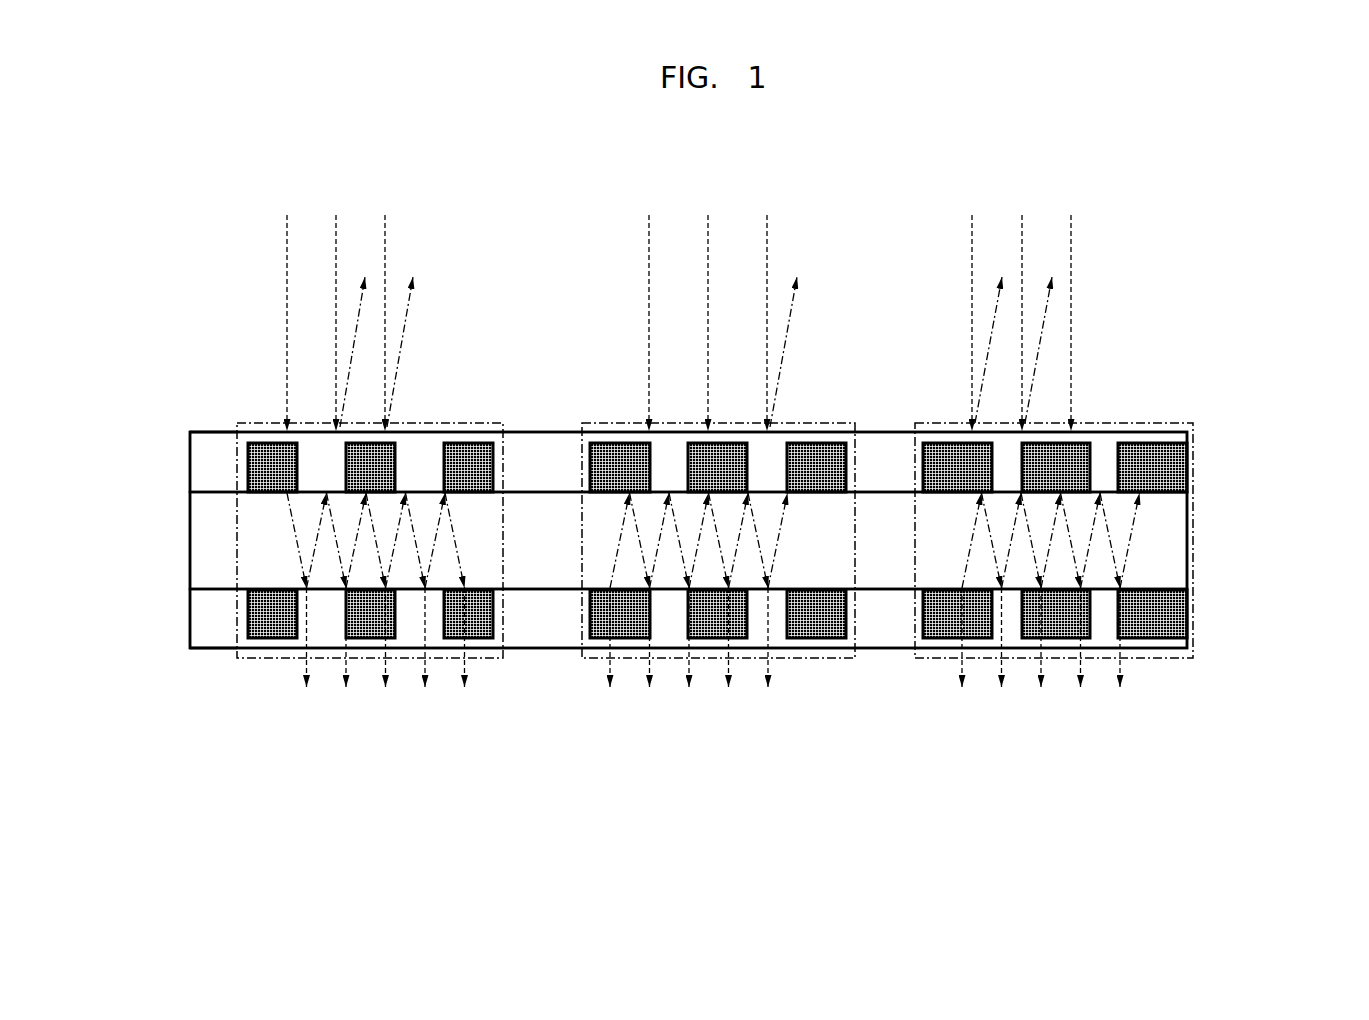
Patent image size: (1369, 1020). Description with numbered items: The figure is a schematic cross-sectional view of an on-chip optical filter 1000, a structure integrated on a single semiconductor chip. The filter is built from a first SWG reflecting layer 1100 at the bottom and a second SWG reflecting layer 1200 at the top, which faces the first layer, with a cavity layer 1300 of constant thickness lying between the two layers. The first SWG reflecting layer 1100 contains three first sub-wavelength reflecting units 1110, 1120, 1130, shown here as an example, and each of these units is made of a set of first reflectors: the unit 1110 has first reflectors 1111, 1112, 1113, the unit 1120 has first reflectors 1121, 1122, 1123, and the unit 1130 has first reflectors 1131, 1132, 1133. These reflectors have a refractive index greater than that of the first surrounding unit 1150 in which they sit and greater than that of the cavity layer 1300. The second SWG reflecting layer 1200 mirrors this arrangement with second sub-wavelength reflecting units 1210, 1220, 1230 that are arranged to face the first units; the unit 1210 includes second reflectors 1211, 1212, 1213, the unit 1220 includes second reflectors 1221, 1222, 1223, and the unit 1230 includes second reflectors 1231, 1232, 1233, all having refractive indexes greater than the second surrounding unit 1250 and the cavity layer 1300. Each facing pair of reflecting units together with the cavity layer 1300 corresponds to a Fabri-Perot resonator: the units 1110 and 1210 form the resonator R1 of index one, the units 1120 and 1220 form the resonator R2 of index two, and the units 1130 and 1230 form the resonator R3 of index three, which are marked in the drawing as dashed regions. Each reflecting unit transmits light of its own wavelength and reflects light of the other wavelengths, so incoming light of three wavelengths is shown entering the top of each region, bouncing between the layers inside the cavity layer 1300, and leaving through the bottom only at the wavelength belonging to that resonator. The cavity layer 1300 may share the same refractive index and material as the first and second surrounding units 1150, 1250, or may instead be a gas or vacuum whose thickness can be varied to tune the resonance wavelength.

The on-chip optical filter 1000 is at (1165, 238).
The first SWG reflecting layer 1100 is at (1200, 592).
The first sub-wavelength reflecting unit 1110 is at (463, 737).
The first reflector 1111 is at (275, 628).
The first reflector 1112 is at (365, 628).
The first reflector 1113 is at (452, 628).
The first sub-wavelength reflecting unit 1120 is at (812, 737).
The first reflector 1121 is at (623, 628).
The first reflector 1122 is at (703, 628).
The first reflector 1123 is at (805, 628).
The first sub-wavelength reflecting unit 1130 is at (1148, 737).
The first reflector 1131 is at (972, 628).
The first reflector 1132 is at (1062, 628).
The first reflector 1133 is at (1152, 628).
The first surrounding unit 1150 is at (207, 641).
The second SWG reflecting layer 1200 is at (1200, 433).
The second sub-wavelength reflecting unit 1210 is at (540, 349).
The second reflector 1211 is at (282, 458).
The second reflector 1212 is at (389, 453).
The second reflector 1213 is at (468, 457).
The second sub-wavelength reflecting unit 1220 is at (918, 349).
The second reflector 1221 is at (623, 453).
The second reflector 1222 is at (733, 450).
The second reflector 1223 is at (827, 450).
The second sub-wavelength reflecting unit 1230 is at (1212, 351).
The second reflector 1231 is at (980, 450).
The second reflector 1232 is at (1077, 453).
The second reflector 1233 is at (1158, 453).
The second surrounding unit 1250 is at (210, 447).
The cavity layer 1300 is at (1200, 495).
The Fabri-Perot resonator R1 is at (258, 422).
The Fabri-Perot resonator R2 is at (617, 422).
The Fabri-Perot resonator R3 is at (950, 423).